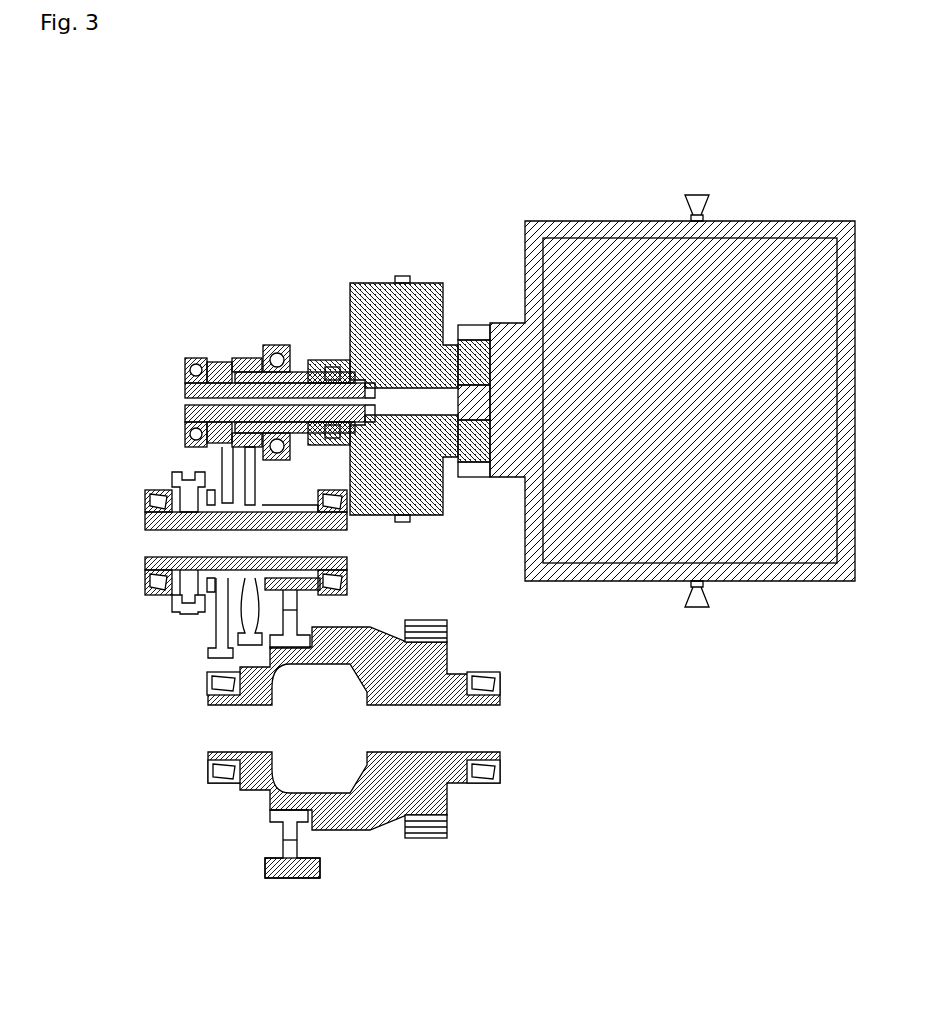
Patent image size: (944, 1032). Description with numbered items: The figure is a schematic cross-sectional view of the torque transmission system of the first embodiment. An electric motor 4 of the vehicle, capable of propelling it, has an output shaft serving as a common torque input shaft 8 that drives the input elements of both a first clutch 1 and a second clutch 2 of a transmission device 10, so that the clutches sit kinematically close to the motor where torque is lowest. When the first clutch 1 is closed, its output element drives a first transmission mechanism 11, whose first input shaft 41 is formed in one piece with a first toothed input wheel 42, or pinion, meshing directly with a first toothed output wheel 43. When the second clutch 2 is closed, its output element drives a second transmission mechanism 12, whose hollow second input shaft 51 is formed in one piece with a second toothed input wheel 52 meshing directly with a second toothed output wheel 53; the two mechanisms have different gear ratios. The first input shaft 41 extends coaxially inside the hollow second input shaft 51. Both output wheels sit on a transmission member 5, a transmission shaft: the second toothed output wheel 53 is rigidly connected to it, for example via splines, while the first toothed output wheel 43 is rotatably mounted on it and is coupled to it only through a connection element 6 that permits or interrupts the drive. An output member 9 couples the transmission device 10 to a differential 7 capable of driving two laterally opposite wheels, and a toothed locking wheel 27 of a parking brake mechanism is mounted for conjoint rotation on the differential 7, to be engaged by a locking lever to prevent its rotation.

The first clutch 1 is at (375, 330).
The second clutch 2 is at (420, 320).
The electric motor 4 is at (613, 300).
The transmission member 5 is at (225, 520).
The connection element 6 is at (160, 475).
The differential 7 is at (405, 668).
The common torque input shaft 8 is at (470, 400).
The output member 9 is at (300, 520).
The transmission device 10 is at (125, 378).
The first transmission mechanism 11 is at (205, 325).
The second transmission mechanism 12 is at (253, 305).
The toothed locking wheel 27 is at (430, 620).
The first input shaft 41 is at (185, 402).
The first toothed input wheel 42 is at (222, 362).
The first toothed output wheel 43 is at (216, 622).
The second input shaft 51 is at (300, 365).
The second toothed input wheel 52 is at (252, 358).
The second toothed output wheel 53 is at (248, 600).